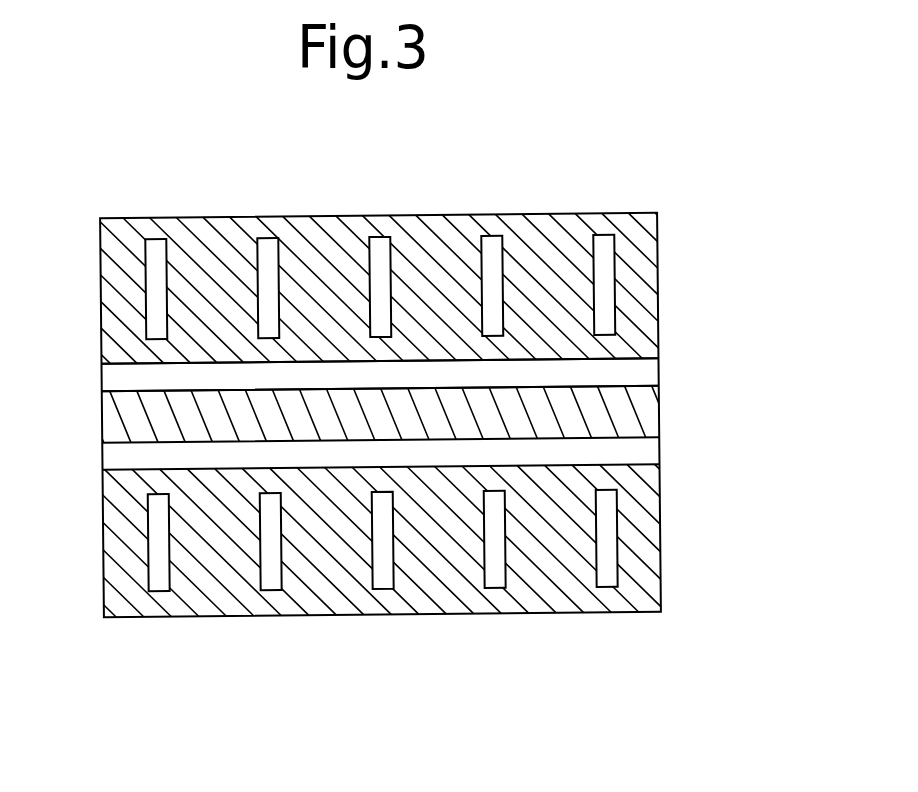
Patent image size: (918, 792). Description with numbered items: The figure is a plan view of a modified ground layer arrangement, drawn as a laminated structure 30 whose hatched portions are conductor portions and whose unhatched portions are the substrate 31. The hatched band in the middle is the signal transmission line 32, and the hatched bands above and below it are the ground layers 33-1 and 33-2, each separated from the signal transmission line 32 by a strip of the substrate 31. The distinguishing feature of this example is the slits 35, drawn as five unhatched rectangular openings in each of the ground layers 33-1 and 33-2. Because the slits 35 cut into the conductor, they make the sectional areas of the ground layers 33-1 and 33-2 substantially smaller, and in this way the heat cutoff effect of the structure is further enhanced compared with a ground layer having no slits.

The laminated electrode body 30 is at (383, 200).
The substrate 31 is at (110, 382).
The signal transmission line 32 is at (650, 415).
The ground layer 33-1 is at (650, 313).
The ground layer 33-2 is at (652, 565).
The slits 35 is at (603, 248).